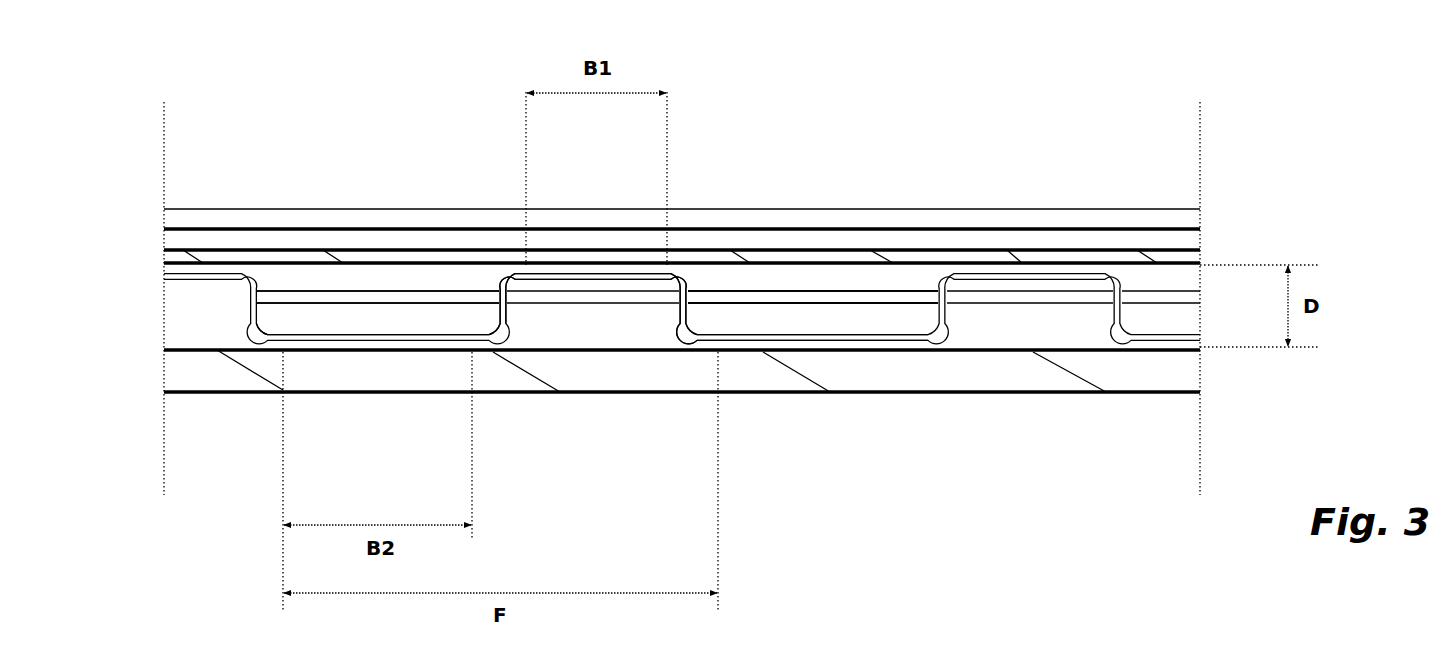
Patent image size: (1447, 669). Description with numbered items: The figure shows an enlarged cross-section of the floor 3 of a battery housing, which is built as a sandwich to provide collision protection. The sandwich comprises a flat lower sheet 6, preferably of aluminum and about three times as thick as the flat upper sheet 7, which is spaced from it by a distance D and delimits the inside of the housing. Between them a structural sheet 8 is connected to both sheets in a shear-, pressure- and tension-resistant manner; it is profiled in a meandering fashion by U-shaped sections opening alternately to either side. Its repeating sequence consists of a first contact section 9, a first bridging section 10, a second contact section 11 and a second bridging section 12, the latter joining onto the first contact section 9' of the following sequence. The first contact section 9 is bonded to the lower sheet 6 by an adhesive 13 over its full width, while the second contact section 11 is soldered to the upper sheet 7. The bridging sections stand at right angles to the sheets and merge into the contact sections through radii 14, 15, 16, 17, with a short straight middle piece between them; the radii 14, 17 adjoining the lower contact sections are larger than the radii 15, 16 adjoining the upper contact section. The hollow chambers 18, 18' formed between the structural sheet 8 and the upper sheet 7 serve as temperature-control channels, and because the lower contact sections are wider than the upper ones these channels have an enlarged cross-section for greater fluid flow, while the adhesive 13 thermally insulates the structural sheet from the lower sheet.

The floor 3 is at (258, 188).
The lower sheet 6 is at (1032, 368).
The upper sheet 7 is at (984, 256).
The structural sheet 8 is at (922, 299).
The first contact section 9 is at (682, 389).
The first contact section of the following sequence 9' is at (812, 451).
The first bridging section 10 is at (496, 294).
The second contact section 11 is at (579, 260).
The second bridging section 12 is at (722, 272).
The adhesive 13 is at (349, 355).
The radius 14 is at (482, 320).
The radius 15 is at (511, 262).
The radius 16 is at (699, 297).
The radius 17 is at (697, 350).
The hollow chamber 18 is at (378, 302).
The hollow chamber 18' is at (813, 304).